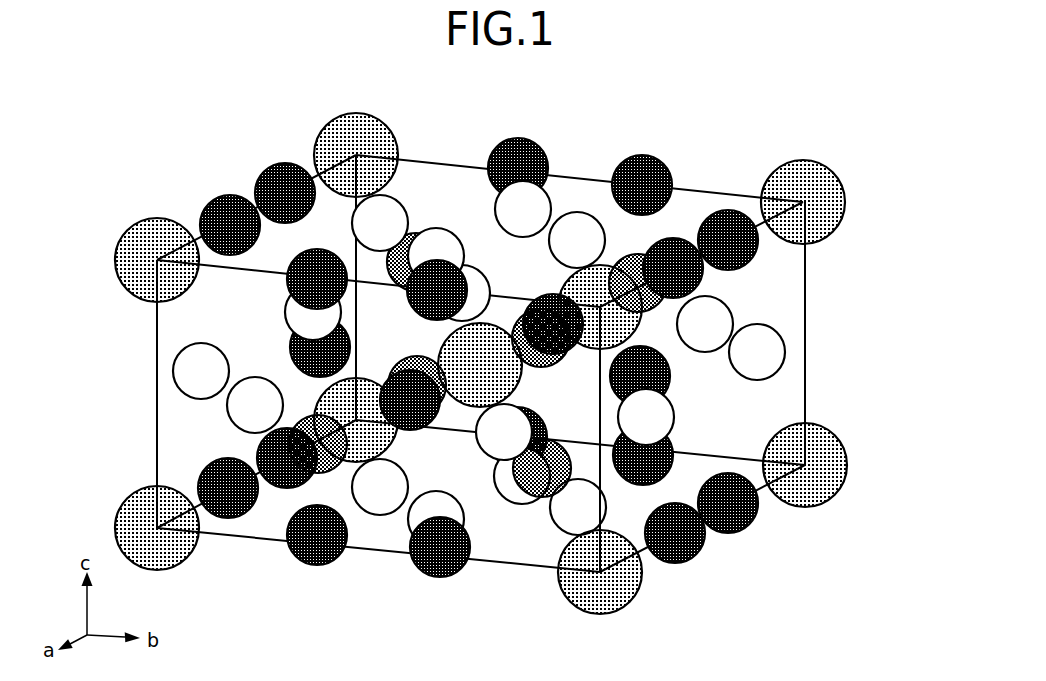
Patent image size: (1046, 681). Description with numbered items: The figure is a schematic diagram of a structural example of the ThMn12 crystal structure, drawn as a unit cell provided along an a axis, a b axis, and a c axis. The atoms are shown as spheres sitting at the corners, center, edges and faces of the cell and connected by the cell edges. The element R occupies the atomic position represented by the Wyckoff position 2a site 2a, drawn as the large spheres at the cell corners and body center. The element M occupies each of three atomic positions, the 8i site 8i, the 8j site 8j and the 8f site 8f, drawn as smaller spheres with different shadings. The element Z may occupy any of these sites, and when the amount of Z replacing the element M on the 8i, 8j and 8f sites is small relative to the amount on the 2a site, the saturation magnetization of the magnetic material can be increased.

The 2a site 2a is at (863, 189).
The 8i site 8i is at (773, 258).
The 8j site 8j is at (793, 326).
The 8f site 8f is at (539, 516).